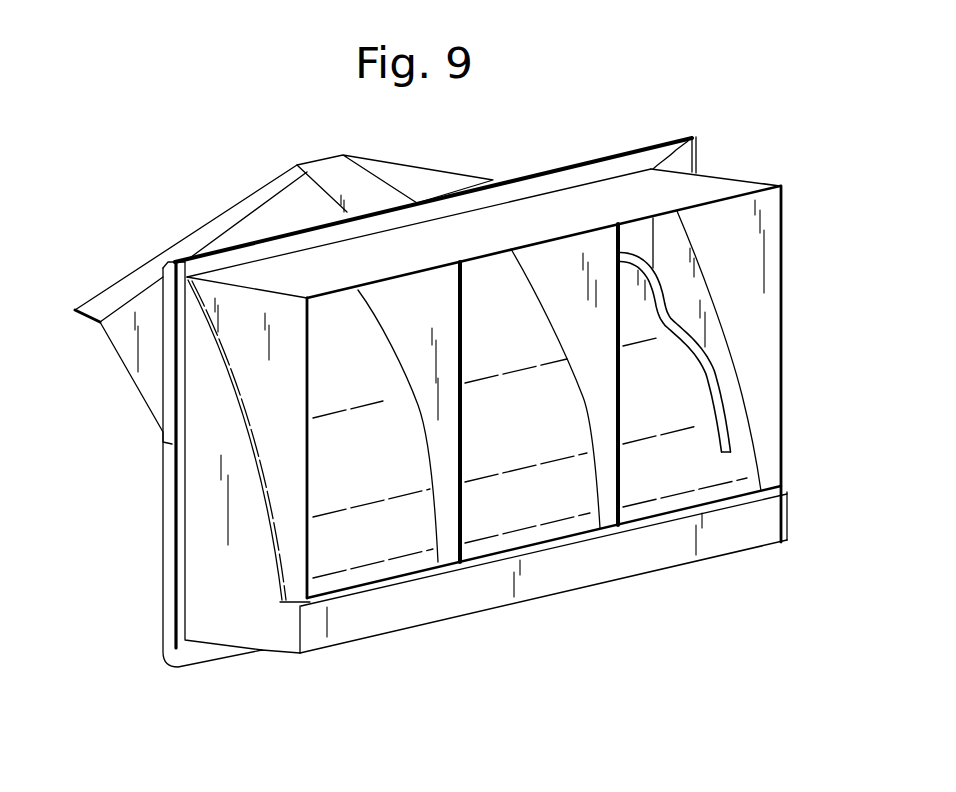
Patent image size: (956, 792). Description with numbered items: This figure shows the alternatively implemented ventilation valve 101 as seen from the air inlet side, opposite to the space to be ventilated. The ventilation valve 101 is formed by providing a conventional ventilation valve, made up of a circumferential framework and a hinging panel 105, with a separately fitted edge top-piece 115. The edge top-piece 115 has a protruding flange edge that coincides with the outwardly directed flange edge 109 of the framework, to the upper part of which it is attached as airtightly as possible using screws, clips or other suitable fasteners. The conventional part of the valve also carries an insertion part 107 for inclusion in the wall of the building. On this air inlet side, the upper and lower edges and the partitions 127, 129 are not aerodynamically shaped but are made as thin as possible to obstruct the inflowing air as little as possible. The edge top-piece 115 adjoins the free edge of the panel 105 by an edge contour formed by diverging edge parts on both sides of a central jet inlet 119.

The ventilation valve 101 is at (728, 580).
The hinging panel 105 is at (660, 417).
The insertion part 107 is at (243, 530).
The flange edge 109 is at (624, 163).
The edge top-piece 115 is at (133, 337).
The central jet inlet 119 is at (338, 172).
The partition 127 is at (447, 527).
The partition 129 is at (603, 480).